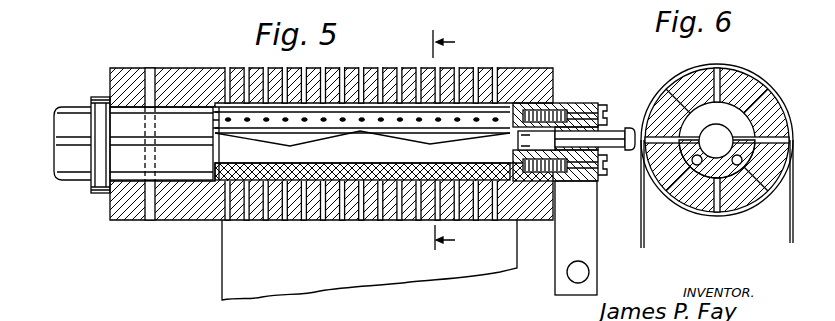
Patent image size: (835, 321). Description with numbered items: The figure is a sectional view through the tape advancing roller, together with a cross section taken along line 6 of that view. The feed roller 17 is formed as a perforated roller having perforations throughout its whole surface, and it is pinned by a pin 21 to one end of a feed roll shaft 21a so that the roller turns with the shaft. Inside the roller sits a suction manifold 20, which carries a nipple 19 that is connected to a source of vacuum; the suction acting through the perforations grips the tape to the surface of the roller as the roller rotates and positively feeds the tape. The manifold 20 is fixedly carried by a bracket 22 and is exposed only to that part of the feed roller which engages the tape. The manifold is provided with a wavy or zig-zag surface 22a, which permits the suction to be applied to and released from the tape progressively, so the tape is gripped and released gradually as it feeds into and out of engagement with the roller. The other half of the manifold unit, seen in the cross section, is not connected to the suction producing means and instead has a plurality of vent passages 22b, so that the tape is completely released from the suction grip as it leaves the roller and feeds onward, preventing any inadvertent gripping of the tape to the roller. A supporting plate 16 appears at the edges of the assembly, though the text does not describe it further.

In FIG. 5, the line 6— 6 is at (451, 140).
In FIG. 5, the supporting plate 16 is at (231, 270).
In FIG. 6, the supporting plate 16 is at (651, 226).
In FIG. 5, the feed roller 17 is at (175, 218).
In FIG. 6, the feed roller 17 is at (690, 84).
In FIG. 5, the nipple 19 is at (617, 127).
In FIG. 5, the suction manifold 20 is at (214, 220).
In FIG. 6, the suction manifold 20 is at (710, 216).
In FIG. 5, the pin 21 is at (152, 72).
In FIG. 5, the feed roll shaft 21a is at (74, 117).
In FIG. 5, the bracket 22 is at (590, 235).
In FIG. 5, the wavy or zig-zag surface 22a is at (348, 133).
In FIG. 6, the wavy or zig-zag surface 22a is at (763, 117).
In FIG. 6, the vent passages 22b is at (740, 190).